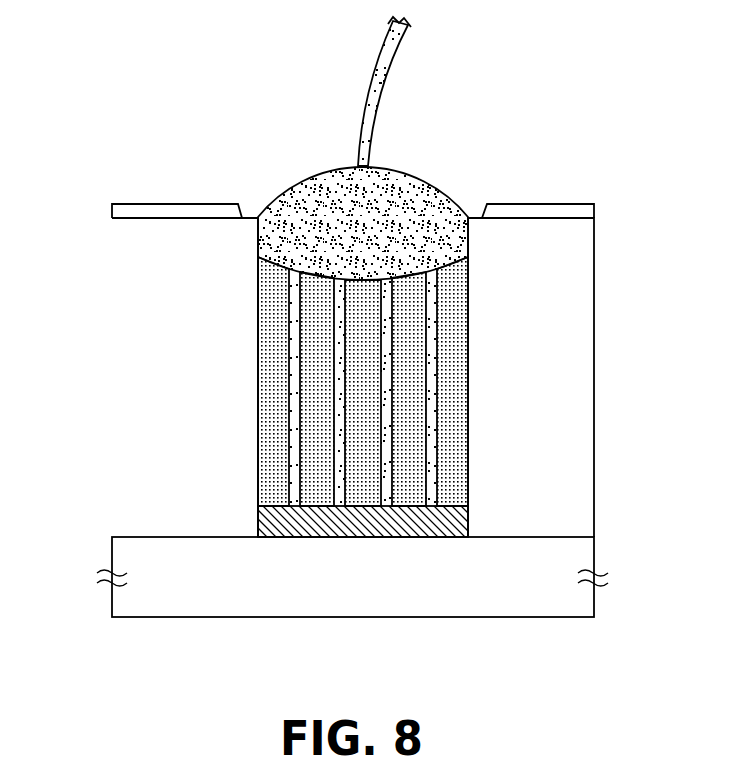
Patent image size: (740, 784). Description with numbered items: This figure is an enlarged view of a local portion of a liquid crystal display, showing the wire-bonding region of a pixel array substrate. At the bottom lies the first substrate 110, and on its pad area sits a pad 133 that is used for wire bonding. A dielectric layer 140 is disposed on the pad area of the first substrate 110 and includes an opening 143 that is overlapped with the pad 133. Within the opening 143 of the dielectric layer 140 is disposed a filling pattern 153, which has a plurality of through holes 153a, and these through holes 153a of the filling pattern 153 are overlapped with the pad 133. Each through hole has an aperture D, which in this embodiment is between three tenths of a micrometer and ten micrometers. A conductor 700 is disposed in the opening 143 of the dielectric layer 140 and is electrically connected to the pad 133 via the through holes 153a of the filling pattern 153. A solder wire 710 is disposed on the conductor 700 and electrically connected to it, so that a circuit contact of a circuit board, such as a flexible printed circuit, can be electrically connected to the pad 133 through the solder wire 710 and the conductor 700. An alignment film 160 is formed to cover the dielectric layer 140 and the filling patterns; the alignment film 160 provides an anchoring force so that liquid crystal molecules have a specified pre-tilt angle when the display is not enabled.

The first substrate 110 is at (491, 607).
The pad 133 is at (360, 523).
The dielectric layer 140 is at (588, 378).
The opening 143 is at (271, 392).
The filling pattern 153 is at (320, 506).
The through holes 153a is at (302, 413).
The alignment film 160 is at (258, 256).
The conductor 700 is at (427, 192).
The solder wire 710 is at (381, 67).
The aperture D is at (306, 302).